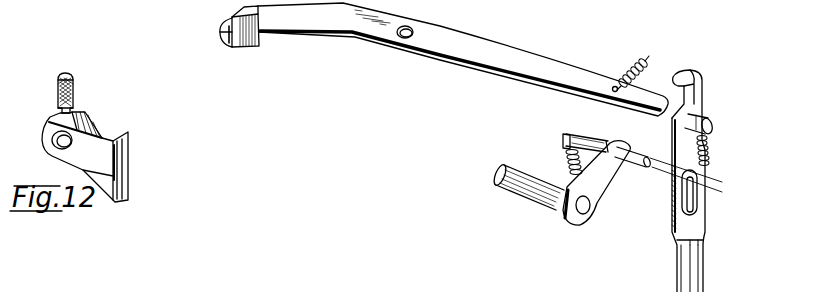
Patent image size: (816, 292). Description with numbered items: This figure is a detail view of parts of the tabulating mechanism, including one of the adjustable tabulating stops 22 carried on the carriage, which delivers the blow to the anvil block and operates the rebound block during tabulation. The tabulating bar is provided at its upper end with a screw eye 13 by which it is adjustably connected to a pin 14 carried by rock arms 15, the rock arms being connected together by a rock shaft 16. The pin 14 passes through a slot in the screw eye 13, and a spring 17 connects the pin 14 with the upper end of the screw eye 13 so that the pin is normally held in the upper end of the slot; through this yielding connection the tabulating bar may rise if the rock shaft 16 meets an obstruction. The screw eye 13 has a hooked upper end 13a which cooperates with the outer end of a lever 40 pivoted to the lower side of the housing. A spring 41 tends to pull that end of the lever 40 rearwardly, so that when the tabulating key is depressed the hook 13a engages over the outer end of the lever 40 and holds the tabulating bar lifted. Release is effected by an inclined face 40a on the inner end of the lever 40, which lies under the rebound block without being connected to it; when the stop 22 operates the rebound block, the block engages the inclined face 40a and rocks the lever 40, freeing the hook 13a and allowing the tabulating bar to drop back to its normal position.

The screw eye 13 is at (710, 168).
The hooked upper end 13a is at (675, 84).
The pin 14 is at (628, 162).
The rock arm 15 is at (608, 182).
The rock shaft 16 is at (540, 198).
The spring 17 is at (709, 149).
The tabulating stop 22 is at (128, 158).
The lever 40 is at (418, 59).
The inclined face 40a is at (221, 39).
The spring 41 is at (636, 63).